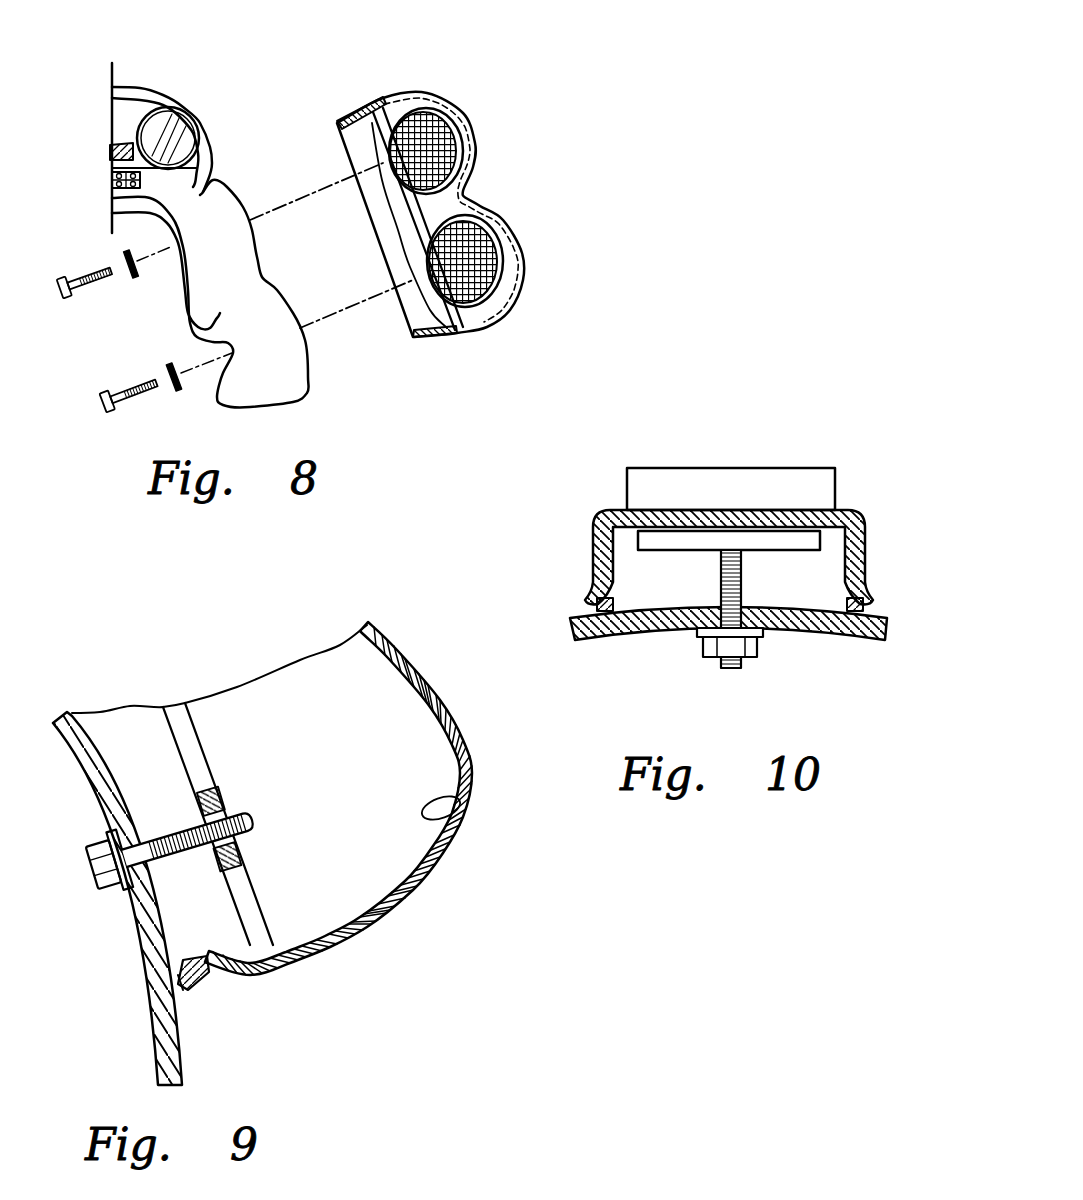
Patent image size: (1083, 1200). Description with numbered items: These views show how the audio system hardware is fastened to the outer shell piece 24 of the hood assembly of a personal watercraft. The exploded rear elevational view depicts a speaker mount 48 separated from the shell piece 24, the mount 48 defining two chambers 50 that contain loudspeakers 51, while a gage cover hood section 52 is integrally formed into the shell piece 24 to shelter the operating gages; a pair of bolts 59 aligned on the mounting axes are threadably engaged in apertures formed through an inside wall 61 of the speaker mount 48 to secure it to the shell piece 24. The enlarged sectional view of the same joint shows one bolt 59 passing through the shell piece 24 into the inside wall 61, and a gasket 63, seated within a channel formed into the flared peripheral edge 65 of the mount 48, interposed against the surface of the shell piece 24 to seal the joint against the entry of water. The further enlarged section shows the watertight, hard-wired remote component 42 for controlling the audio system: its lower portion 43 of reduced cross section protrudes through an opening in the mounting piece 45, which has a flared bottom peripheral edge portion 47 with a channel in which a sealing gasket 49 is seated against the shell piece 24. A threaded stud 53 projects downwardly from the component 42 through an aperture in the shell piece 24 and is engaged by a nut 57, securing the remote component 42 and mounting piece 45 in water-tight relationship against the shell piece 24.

In FIG. 8, the shell piece 24 is at (310, 385).
In FIG. 9, the shell piece 24 is at (155, 1008).
In FIG. 10, the shell piece 24 is at (870, 640).
In FIG. 8, the remote component 42 is at (112, 177).
In FIG. 10, the remote component 42 is at (738, 467).
In FIG. 10, the lower portion 43 is at (787, 552).
In FIG. 10, the mounting piece 45 is at (862, 518).
In FIG. 10, the flared bottom peripheral edge portion 47 is at (590, 595).
In FIG. 8, the speaker mount 48 is at (443, 206).
In FIG. 9, the speaker mount 48 is at (380, 810).
In FIG. 10, the sealing gasket 49 is at (873, 613).
In FIG. 8, the chamber 50 is at (500, 247).
In FIG. 9, the chamber 50 is at (450, 818).
In FIG. 8, the loudspeaker 51 is at (443, 123).
In FIG. 8, the gage cover hood section 52 is at (173, 97).
In FIG. 10, the threaded stud 53 is at (740, 670).
In FIG. 10, the nut 57 is at (710, 660).
In FIG. 8, the bolt 59 is at (127, 380).
In FIG. 9, the bolt 59 is at (173, 833).
In FIG. 8, the inside wall 61 is at (417, 218).
In FIG. 9, the inside wall 61 is at (203, 753).
In FIG. 9, the gasket 63 is at (183, 987).
In FIG. 8, the flared peripheral edge 65 is at (340, 125).
In FIG. 9, the flared peripheral edge 65 is at (197, 983).